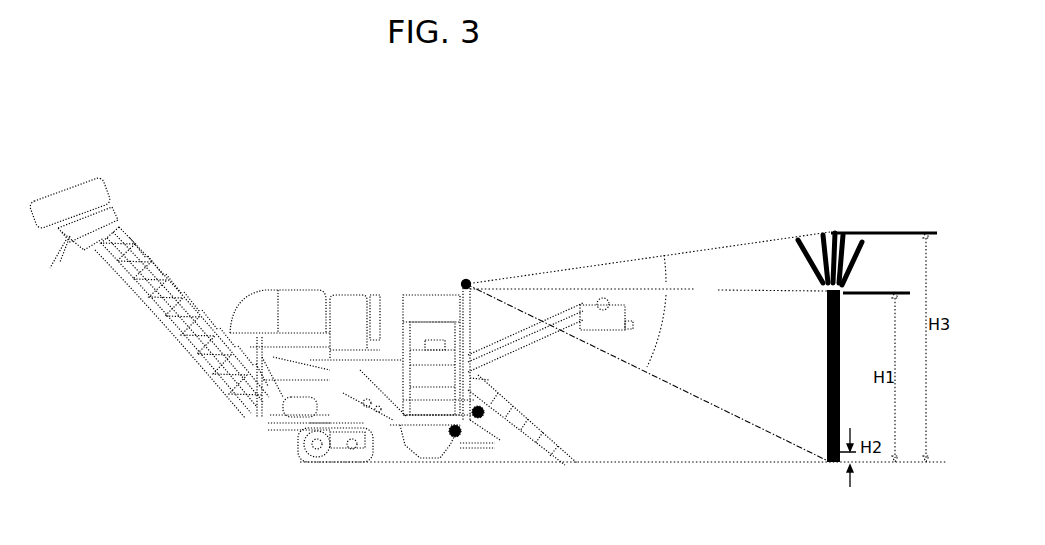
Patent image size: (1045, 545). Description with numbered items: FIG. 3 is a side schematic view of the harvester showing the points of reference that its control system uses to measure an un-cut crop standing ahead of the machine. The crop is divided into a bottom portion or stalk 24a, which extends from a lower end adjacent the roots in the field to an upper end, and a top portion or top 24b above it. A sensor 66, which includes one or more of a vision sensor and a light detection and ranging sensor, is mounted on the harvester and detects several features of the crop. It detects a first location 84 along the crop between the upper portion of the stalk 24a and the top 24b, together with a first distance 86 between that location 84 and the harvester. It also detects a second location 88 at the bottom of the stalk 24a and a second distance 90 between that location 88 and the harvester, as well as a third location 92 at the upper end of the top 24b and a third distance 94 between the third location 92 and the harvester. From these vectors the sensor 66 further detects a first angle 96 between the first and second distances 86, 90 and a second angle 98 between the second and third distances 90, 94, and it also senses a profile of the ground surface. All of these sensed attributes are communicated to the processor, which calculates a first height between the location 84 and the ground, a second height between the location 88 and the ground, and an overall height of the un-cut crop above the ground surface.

The sensor 66 is at (462, 281).
The first location 84 is at (825, 297).
The first distance 86 is at (648, 293).
The second location 88 is at (826, 462).
The second distance 90 is at (647, 372).
The third location 92 is at (826, 232).
The third distance 94 is at (648, 255).
The first angle 96 is at (672, 331).
The second angle 98 is at (673, 268).
The stalk 24a is at (822, 379).
The top 24b is at (808, 265).